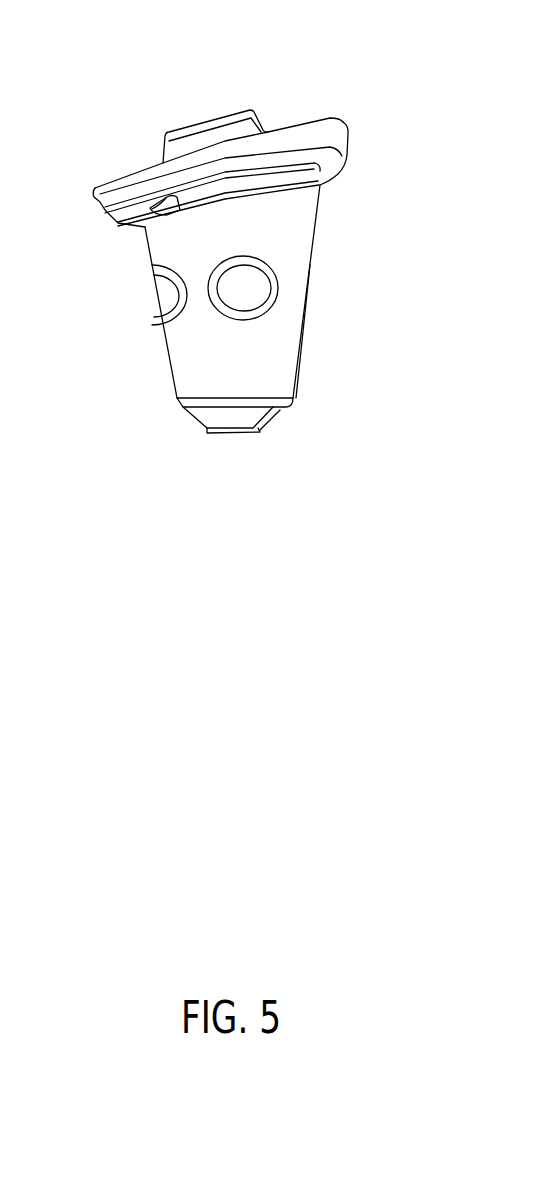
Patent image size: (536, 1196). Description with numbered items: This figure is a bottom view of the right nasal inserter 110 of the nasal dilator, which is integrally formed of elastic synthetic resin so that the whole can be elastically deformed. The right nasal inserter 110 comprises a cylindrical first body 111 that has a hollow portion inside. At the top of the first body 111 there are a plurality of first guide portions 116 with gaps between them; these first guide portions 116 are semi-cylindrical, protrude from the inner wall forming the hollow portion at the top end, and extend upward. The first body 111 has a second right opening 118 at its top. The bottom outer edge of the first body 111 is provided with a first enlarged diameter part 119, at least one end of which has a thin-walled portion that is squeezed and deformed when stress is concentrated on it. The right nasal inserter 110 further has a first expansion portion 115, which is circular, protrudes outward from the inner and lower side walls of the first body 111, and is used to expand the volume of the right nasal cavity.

The right nasal inserter 110 is at (350, 93).
The first body 111 is at (287, 355).
The first expansion portion 115 is at (263, 285).
The first guide portions 116 is at (220, 418).
The second right opening 118 is at (240, 433).
The first enlarged diameter part 119 is at (340, 142).